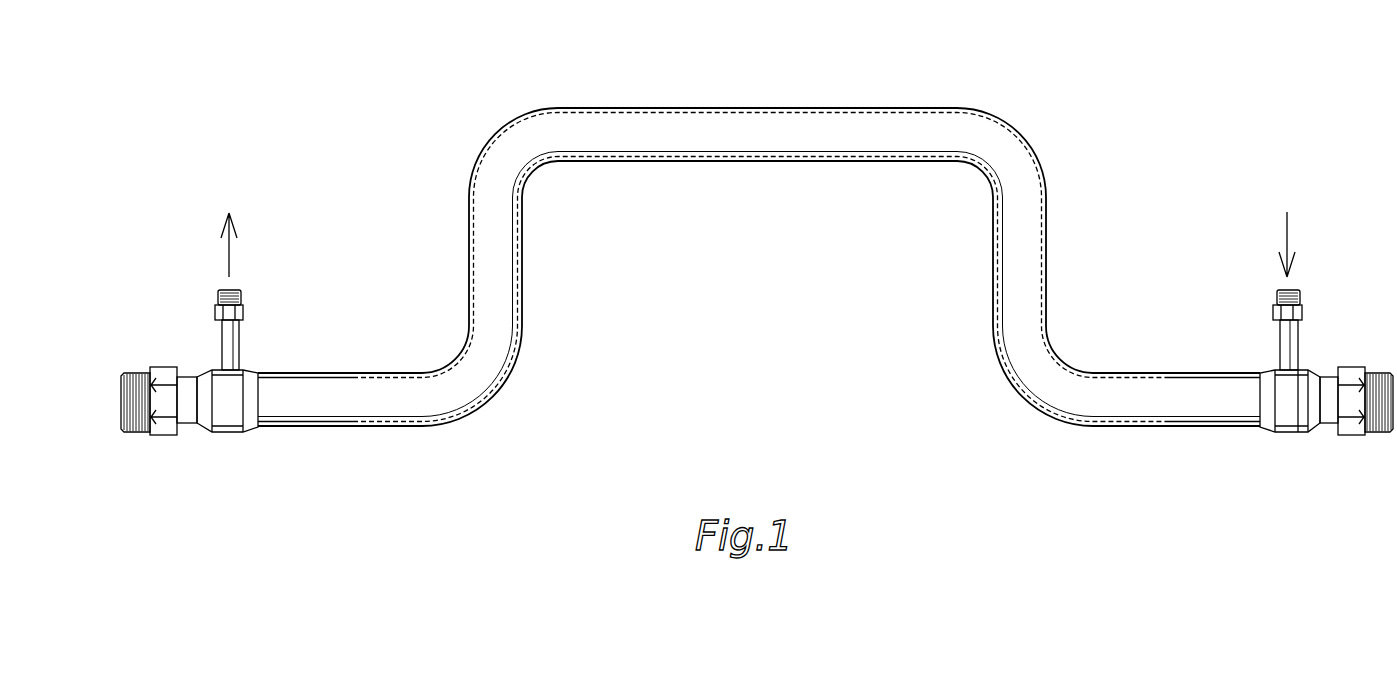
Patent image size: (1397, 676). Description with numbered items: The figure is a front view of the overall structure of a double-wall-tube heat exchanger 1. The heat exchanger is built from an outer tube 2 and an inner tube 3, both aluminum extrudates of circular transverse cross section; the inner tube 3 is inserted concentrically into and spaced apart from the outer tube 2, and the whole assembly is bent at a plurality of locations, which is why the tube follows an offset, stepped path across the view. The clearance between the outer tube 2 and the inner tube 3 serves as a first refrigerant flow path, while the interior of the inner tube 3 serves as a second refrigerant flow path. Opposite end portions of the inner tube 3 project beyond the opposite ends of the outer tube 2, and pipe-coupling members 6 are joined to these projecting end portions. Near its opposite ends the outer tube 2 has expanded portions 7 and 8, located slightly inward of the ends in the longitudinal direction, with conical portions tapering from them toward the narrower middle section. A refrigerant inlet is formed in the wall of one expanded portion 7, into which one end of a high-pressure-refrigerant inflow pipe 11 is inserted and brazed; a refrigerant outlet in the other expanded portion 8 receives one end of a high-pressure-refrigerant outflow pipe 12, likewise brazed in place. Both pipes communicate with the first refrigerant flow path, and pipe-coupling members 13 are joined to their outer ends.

The double-wall-tube heat exchanger 1 is at (1093, 72).
The outer tube 2 is at (703, 108).
The inner tube 3 is at (725, 158).
The pipe-coupling members 6 is at (162, 433).
The expanded portion 7 is at (1285, 436).
The expanded portion 8 is at (230, 436).
The high-pressure-refrigerant inflow pipe 11 is at (1297, 345).
The high-pressure-refrigerant outflow pipe 12 is at (222, 345).
The pipe-coupling members 13 is at (218, 295).